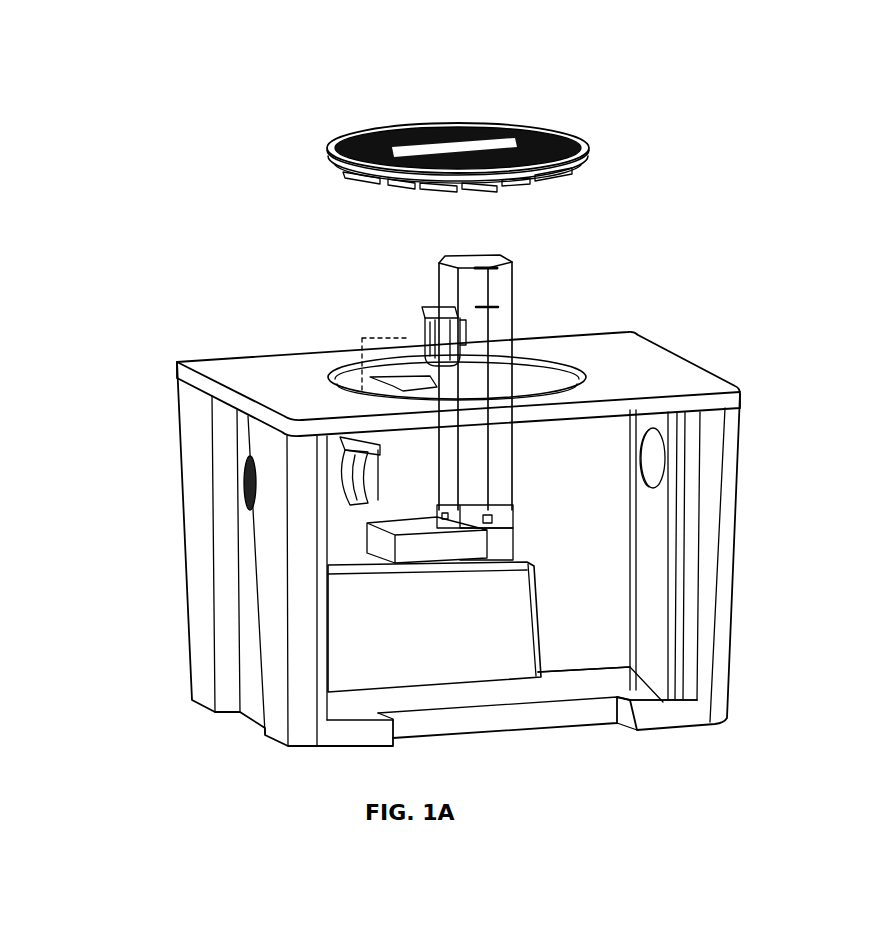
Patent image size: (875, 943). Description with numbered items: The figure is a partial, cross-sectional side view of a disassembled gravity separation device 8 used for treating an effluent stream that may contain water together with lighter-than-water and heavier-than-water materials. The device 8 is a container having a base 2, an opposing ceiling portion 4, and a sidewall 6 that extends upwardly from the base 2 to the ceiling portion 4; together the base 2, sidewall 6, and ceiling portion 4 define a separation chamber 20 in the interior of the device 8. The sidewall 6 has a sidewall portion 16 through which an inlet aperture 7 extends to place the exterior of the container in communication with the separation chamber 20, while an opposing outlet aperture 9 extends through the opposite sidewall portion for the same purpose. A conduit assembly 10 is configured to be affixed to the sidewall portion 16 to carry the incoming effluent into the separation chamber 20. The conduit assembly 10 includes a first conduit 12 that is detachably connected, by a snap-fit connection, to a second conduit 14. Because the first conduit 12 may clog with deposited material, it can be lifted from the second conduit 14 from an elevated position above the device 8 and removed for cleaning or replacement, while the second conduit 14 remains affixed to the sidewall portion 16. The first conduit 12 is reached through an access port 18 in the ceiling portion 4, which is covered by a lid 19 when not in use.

The base 2 is at (500, 694).
The ceiling portion 4 is at (611, 345).
The sidewall 6 is at (734, 512).
The inlet aperture 7 is at (245, 469).
The gravity separation device 8 is at (228, 96).
The outlet aperture 9 is at (640, 457).
The conduit assembly 10 is at (358, 559).
The first conduit 12 is at (510, 254).
The second conduit 14 is at (386, 460).
The sidewall portion 16 is at (196, 485).
The access port 18 is at (536, 387).
The lid 19 is at (546, 128).
The separation chamber 20 is at (565, 669).